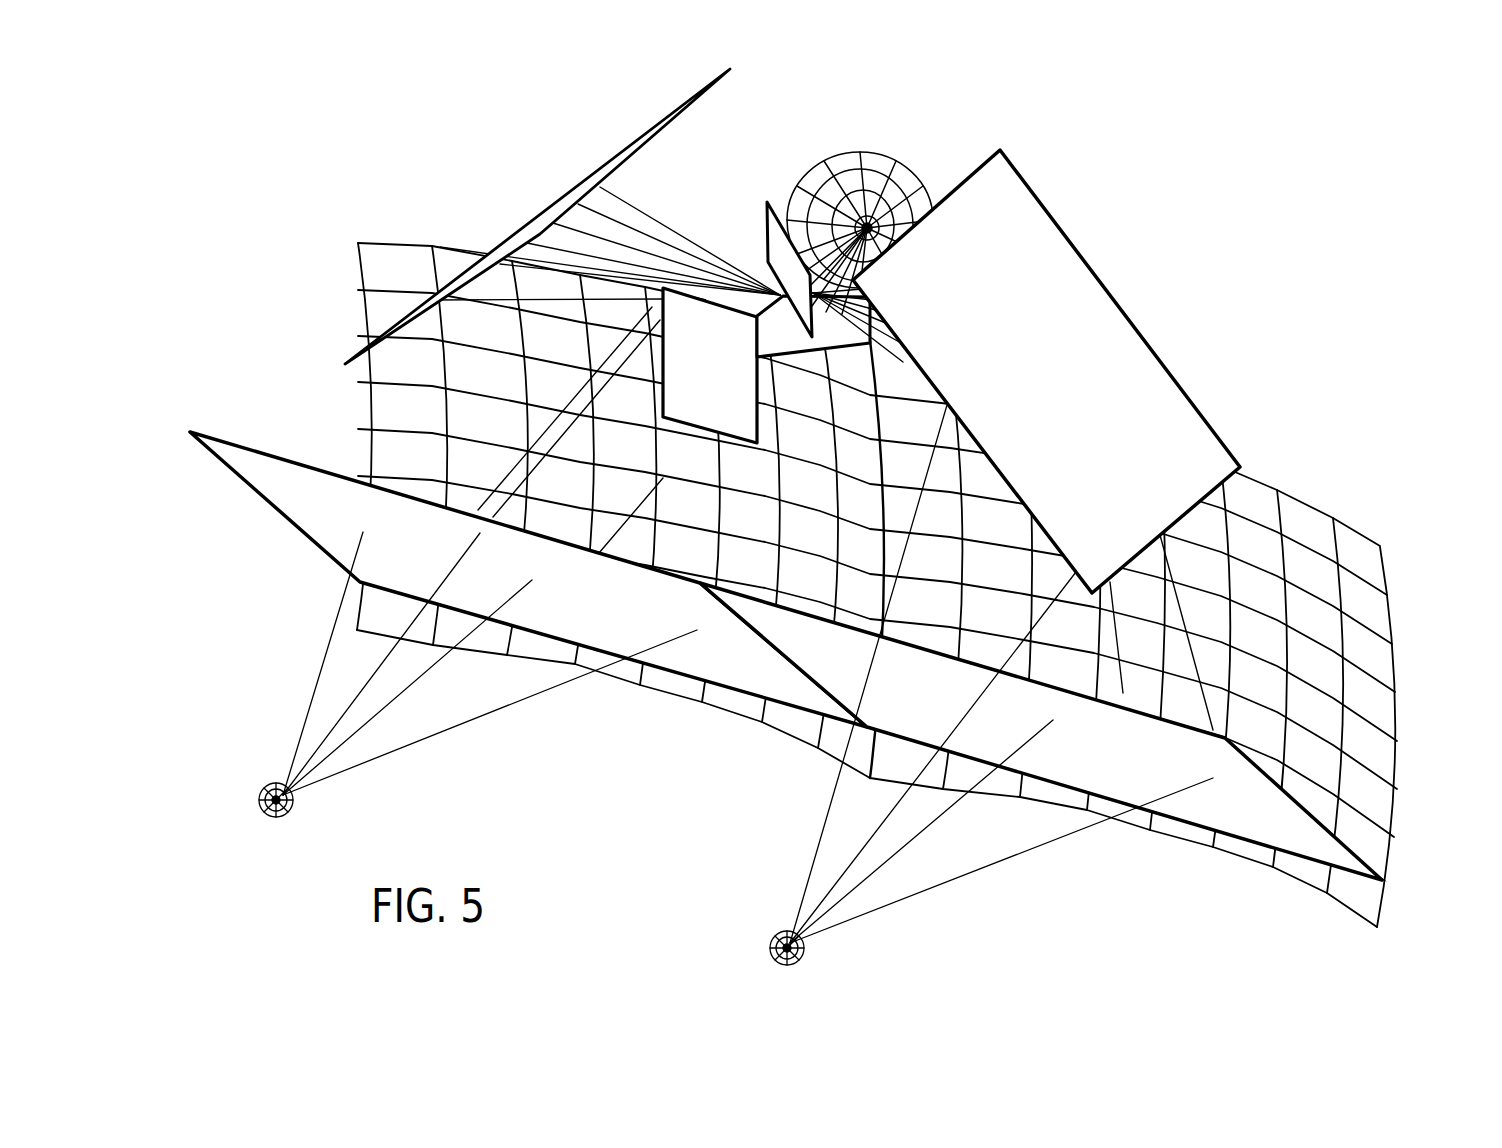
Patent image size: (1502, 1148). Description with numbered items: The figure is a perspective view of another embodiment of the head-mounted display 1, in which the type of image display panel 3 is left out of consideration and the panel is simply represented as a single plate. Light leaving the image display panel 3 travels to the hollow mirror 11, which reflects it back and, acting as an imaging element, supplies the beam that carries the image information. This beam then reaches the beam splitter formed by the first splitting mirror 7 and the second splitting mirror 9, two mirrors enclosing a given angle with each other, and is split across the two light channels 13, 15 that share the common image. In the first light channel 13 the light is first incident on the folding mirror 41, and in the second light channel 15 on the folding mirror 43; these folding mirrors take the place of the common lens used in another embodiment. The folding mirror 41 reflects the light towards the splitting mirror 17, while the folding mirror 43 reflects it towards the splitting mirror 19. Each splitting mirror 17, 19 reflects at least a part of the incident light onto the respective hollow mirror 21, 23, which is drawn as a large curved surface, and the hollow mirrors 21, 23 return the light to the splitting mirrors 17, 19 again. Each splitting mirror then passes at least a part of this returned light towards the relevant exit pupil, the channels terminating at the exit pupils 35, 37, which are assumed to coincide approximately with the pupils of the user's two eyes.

The head-mounted display 1 is at (501, 783).
The image display panel 3 is at (683, 313).
The first splitting mirror 7 is at (833, 338).
The second splitting mirror 9 is at (775, 232).
The hollow mirror 11 is at (876, 153).
The first light channel 13 is at (768, 692).
The second light channel 15 is at (1398, 390).
The splitting mirror 17 is at (298, 505).
The splitting mirror 19 is at (1260, 822).
The hollow mirror 21 is at (385, 268).
The hollow mirror 23 is at (1362, 547).
The exit pupil 35 is at (257, 800).
The exit pupil 37 is at (768, 947).
The folding mirror 41 is at (562, 196).
The folding mirror 43 is at (1030, 228).